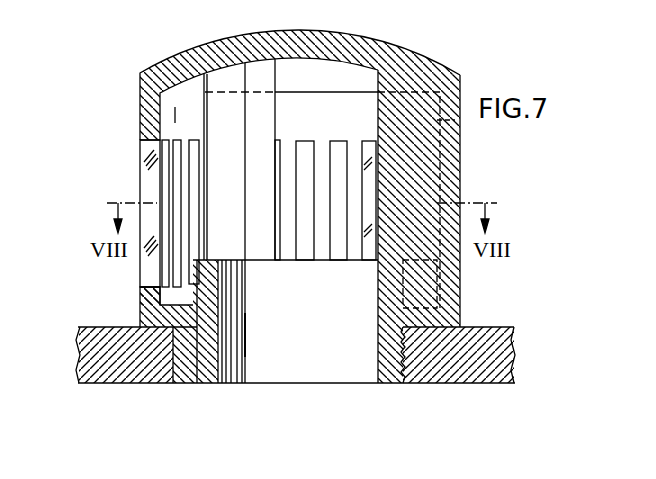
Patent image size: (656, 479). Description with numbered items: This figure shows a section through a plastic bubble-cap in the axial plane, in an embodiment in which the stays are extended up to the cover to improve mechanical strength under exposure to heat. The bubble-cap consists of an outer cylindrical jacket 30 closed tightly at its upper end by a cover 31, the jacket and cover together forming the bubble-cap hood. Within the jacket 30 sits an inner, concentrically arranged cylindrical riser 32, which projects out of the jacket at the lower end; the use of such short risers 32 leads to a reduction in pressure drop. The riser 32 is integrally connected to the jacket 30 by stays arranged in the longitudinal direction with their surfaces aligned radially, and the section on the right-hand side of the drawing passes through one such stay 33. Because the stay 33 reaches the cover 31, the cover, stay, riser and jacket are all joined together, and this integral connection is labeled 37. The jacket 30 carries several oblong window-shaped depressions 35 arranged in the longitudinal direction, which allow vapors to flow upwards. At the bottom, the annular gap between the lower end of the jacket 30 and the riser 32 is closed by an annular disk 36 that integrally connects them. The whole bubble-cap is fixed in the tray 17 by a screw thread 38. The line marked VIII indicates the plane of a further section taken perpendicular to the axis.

The tray 17 is at (98, 384).
The cylindrical jacket 30 is at (140, 293).
The cover 31 is at (421, 58).
The riser 32 is at (218, 290).
The stay 33 is at (268, 80).
The oblong window-shaped depression 35 is at (143, 180).
The annular disk 36 is at (173, 313).
The integral connection 37 is at (415, 180).
The screw thread 38 is at (406, 378).